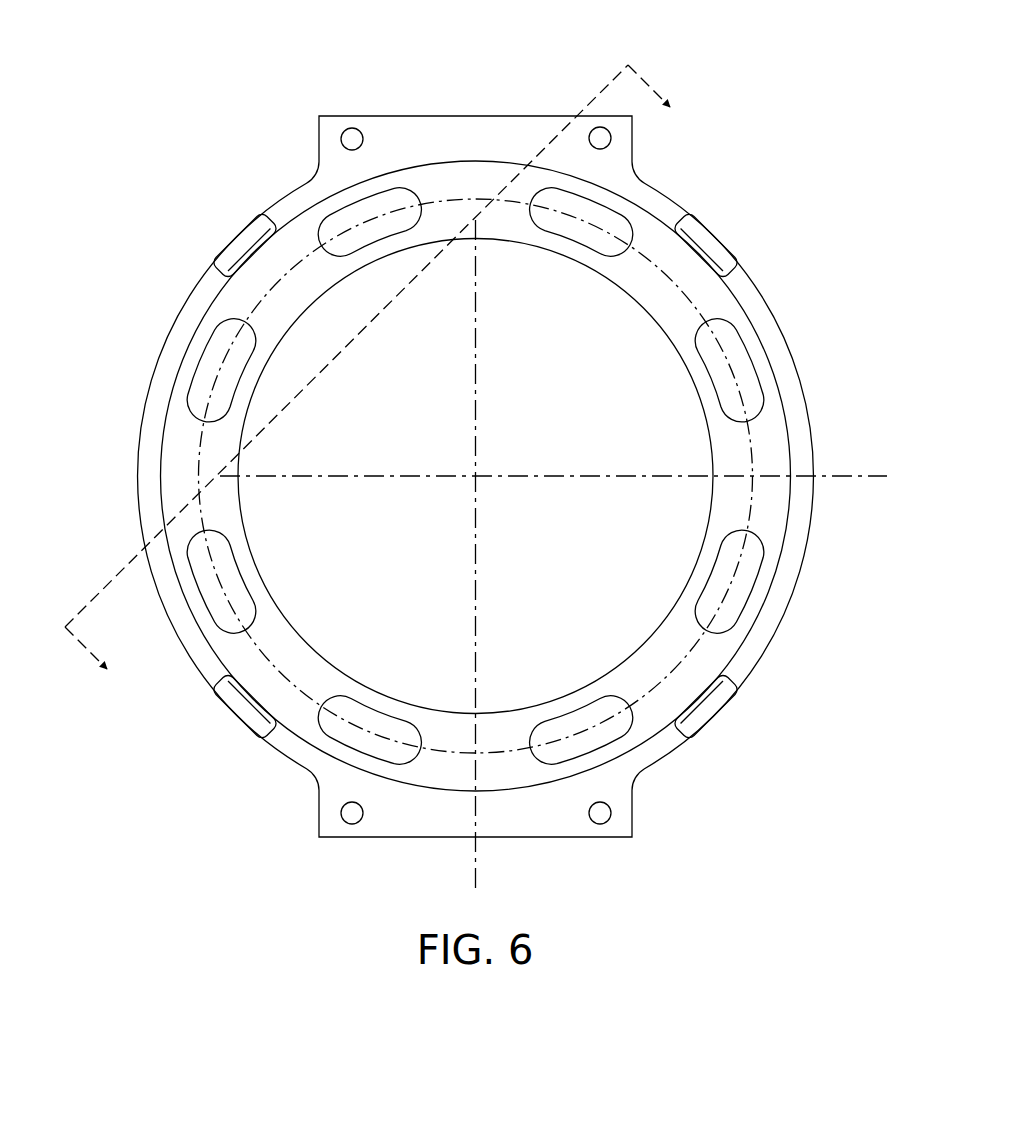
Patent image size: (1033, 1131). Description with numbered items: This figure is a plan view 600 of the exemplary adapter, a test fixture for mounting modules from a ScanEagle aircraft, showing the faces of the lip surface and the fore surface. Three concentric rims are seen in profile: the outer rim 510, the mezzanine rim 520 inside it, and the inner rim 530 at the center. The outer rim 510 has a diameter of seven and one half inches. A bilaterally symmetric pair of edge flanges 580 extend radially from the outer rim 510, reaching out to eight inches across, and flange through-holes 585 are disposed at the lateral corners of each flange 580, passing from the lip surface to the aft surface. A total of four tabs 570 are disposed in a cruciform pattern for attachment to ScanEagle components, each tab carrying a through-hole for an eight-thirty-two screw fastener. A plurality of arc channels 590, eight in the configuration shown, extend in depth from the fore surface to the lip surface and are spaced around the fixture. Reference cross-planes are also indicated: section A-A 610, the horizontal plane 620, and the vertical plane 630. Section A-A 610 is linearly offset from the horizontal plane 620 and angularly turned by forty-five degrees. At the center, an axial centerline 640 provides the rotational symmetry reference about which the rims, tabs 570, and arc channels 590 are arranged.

The plan view 600 is at (138, 83).
The outer rim 510 is at (138, 474).
The mezzanine rim 520 is at (160, 511).
The inner rim 530 is at (560, 690).
The tab 570 is at (238, 237).
The edge flange 580 is at (445, 116).
The flange through-hole 585 is at (353, 128).
The arc channel 590 is at (578, 241).
The section A-A 610 is at (607, 82).
The horizontal plane 620 is at (858, 468).
The vertical plane 630 is at (478, 858).
The axial centerline 640 is at (460, 465).